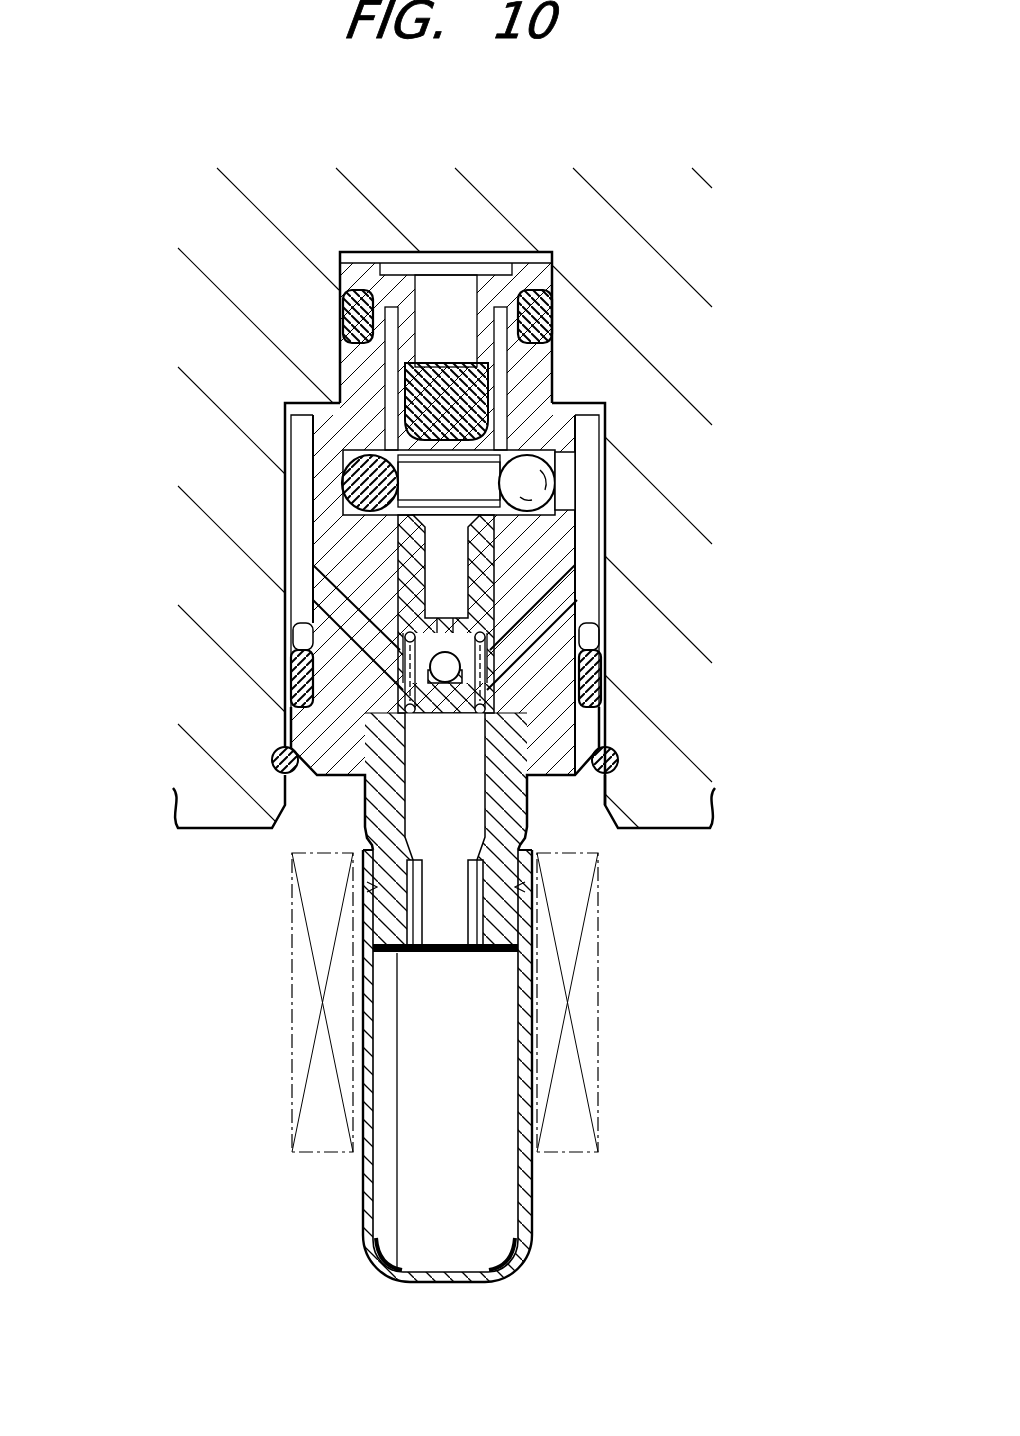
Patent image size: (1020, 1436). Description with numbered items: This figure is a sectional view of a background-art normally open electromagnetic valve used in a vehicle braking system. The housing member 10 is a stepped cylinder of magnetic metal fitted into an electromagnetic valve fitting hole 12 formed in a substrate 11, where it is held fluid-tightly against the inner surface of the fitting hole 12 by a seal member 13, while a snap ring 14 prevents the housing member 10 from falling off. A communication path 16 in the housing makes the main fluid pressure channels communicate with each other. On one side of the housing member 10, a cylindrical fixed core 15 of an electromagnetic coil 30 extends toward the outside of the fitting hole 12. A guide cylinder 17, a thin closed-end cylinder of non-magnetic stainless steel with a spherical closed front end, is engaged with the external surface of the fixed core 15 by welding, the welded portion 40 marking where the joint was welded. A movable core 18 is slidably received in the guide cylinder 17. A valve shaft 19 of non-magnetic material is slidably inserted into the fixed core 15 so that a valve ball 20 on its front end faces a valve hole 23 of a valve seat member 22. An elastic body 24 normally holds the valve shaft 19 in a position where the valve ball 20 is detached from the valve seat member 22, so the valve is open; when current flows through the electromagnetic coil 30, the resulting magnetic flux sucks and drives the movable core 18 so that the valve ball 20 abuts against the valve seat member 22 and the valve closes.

The housing member 10 is at (607, 517).
The substrate 11 is at (690, 810).
The electromagnetic valve fitting hole 12 is at (607, 725).
The seal member 13 is at (567, 657).
The snap ring 14 is at (275, 752).
The fixed core 15 is at (397, 923).
The communication path 16 is at (343, 615).
The guide cylinder 17 is at (367, 1227).
The movable core 18 is at (490, 1212).
The valve shaft 19 is at (453, 775).
The valve ball 20 is at (450, 665).
The valve seat member 22 is at (410, 543).
The valve hole 23 is at (558, 528).
The elastic body 24 is at (403, 653).
The electromagnetic coil 30 is at (585, 1047).
The welded portion 40 is at (380, 887).